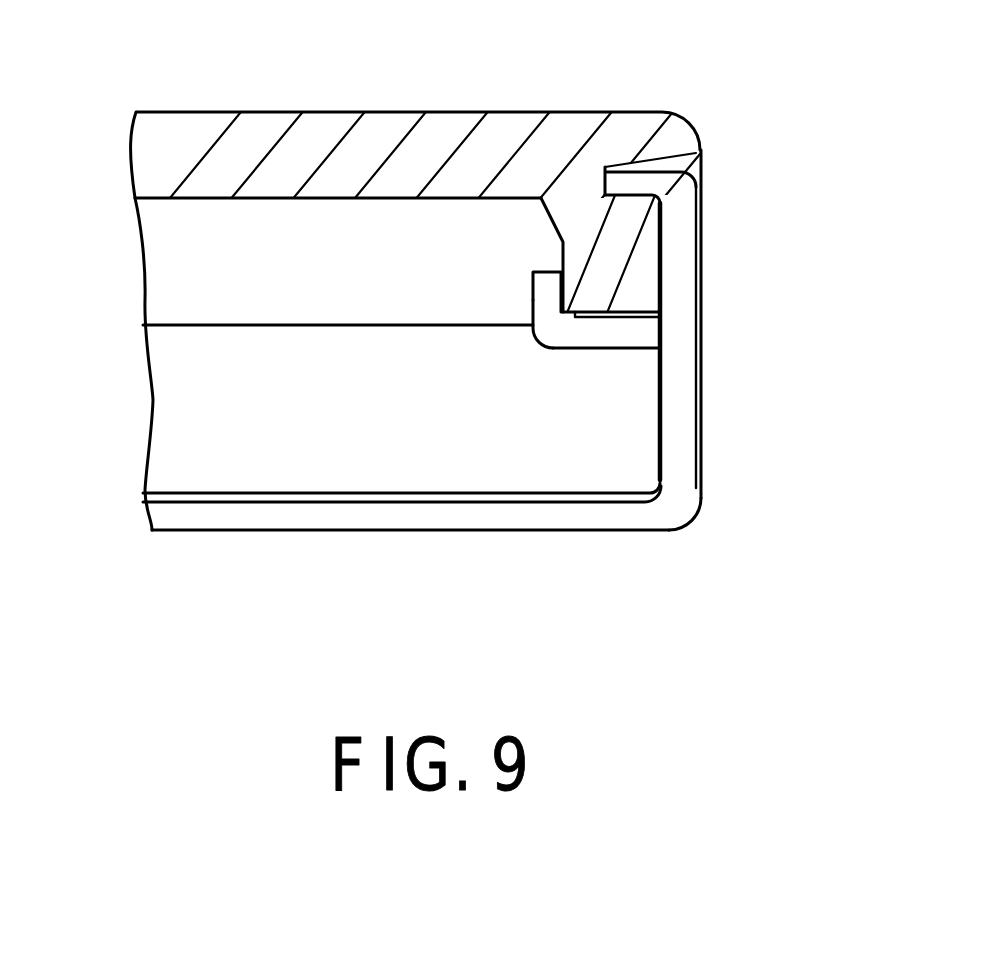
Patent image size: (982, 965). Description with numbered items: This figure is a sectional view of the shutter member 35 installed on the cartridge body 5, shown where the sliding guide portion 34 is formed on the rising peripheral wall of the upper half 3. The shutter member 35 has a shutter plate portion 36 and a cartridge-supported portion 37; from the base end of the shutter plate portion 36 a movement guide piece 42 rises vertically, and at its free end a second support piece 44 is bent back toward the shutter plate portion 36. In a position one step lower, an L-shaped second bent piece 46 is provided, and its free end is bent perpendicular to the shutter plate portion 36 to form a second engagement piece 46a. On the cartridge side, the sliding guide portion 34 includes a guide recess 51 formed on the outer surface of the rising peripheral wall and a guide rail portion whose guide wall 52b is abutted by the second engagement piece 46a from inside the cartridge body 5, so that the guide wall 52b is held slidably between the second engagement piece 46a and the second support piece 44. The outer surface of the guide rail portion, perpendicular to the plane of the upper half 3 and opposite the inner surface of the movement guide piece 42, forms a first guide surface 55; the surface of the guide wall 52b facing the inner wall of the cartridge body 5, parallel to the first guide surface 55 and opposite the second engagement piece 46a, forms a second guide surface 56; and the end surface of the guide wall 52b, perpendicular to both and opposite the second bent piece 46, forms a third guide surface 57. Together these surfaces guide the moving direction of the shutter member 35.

The upper half 3 is at (437, 130).
The cartridge body 5 is at (150, 119).
The sliding guide portion 34 is at (556, 229).
The shutter member 35 is at (656, 530).
The shutter plate portion 36 is at (412, 531).
The cartridge-supported portion 37 is at (705, 355).
The movement guide piece 42 is at (682, 296).
The second support piece 44 is at (665, 180).
The second bent piece 46 is at (613, 352).
The second engagement piece 46a is at (533, 313).
The guide recess 51 is at (640, 162).
The guide wall 52b is at (636, 252).
The first guide surface 55 is at (663, 248).
The second guide surface 56 is at (558, 290).
The third guide surface 57 is at (576, 318).